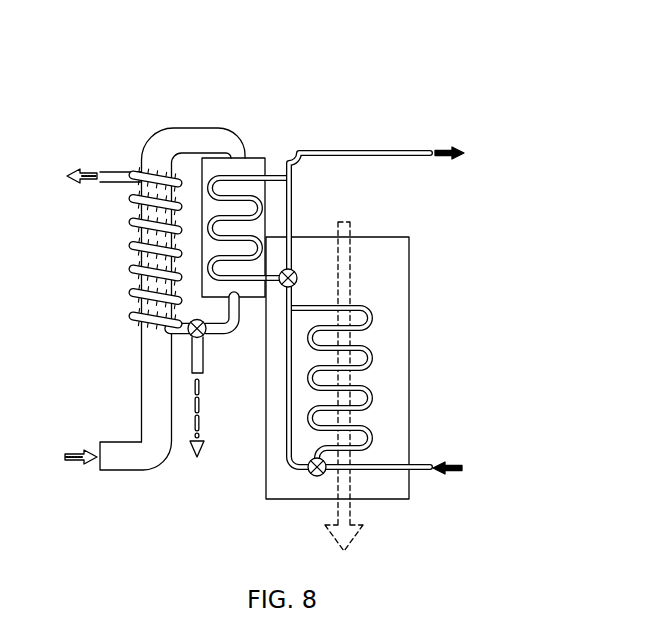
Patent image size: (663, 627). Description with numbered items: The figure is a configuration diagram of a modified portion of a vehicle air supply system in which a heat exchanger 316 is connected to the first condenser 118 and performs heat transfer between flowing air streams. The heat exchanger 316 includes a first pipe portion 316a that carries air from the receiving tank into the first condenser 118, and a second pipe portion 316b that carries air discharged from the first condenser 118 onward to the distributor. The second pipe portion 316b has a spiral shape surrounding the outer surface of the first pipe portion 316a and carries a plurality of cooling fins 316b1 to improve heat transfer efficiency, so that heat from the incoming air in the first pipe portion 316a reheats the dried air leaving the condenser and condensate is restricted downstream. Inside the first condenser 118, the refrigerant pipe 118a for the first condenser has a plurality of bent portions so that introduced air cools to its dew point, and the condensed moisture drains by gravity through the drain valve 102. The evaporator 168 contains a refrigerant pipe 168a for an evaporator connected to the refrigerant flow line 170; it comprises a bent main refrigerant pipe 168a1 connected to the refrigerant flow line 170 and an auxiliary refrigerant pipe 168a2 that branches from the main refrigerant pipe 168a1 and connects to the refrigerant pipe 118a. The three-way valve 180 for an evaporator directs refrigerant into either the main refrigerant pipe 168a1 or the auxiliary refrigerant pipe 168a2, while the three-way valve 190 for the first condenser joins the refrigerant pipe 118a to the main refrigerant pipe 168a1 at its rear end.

The heat exchanger 316 is at (157, 270).
The first pipe portion 316a is at (161, 135).
The second pipe portion 316b is at (119, 174).
The cooling fins 316b1 is at (137, 207).
The first condenser 118 is at (244, 198).
The refrigerant pipe for the first condenser 118a is at (235, 175).
The refrigerant flow line 170 is at (292, 207).
The evaporator 168 is at (397, 368).
The refrigerant pipe for an evaporator 168a is at (408, 353).
The main refrigerant pipe 168a1 is at (290, 248).
The auxiliary refrigerant pipe 168a2 is at (292, 357).
The 3-way valve for the first condenser 190 is at (278, 282).
The drain valve 102 is at (203, 335).
The 3-way valve for an evaporator 180 is at (310, 477).